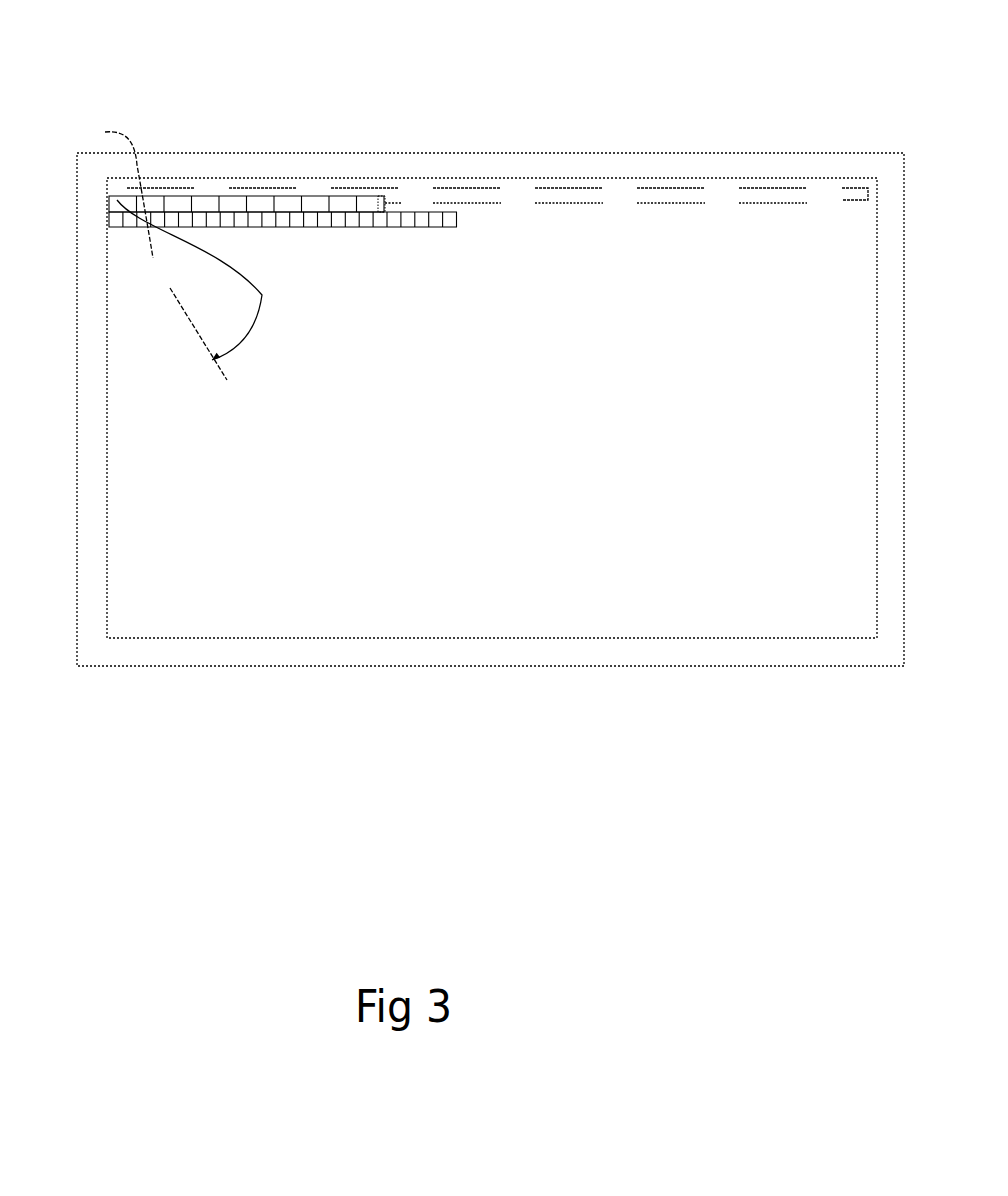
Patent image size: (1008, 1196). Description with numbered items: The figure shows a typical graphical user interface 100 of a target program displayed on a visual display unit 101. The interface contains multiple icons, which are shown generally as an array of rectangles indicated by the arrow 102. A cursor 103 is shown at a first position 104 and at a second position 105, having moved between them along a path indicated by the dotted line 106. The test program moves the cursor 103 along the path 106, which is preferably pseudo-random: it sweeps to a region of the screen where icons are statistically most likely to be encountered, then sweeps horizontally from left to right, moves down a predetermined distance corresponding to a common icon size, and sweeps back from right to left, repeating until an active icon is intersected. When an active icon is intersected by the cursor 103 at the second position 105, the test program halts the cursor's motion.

The graphical user interface 100 is at (315, 637).
The visual display unit 101 is at (488, 667).
The arrow indicating array of icons 102 is at (263, 195).
The cursor 103 is at (374, 208).
The first position 104 is at (200, 353).
The second position 105 is at (375, 200).
The path 106 is at (393, 237).